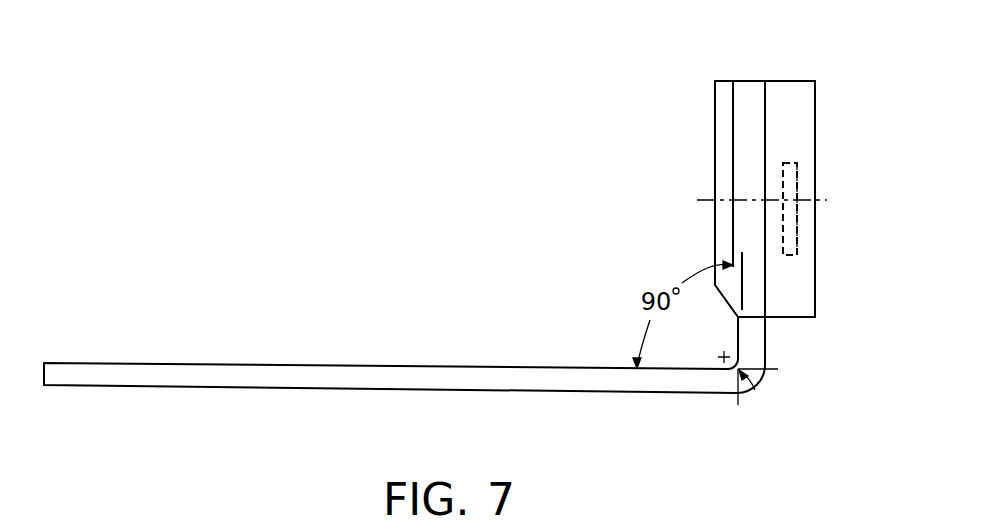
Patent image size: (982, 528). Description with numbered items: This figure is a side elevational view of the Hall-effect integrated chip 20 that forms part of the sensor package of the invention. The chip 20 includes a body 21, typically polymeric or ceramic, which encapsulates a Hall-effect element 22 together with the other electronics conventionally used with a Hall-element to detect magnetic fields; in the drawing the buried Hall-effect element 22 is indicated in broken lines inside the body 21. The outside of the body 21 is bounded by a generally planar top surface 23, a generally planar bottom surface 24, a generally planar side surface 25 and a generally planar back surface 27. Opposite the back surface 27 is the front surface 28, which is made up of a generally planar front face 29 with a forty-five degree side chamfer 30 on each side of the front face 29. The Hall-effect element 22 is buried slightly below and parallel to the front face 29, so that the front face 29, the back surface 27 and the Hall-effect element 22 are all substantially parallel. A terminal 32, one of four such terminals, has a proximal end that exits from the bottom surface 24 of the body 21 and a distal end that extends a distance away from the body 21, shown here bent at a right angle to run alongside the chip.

The Hall-effect integrated chip 20 is at (747, 98).
The body 21 is at (743, 171).
The Hall-effect element 22 is at (797, 168).
The top surface 23 is at (749, 80).
The bottom surface 24 is at (797, 318).
The side surface 25 is at (742, 233).
The back surface 27 is at (714, 129).
The front surface 28 is at (793, 282).
The front face 29 is at (815, 296).
The side chamfer 30 is at (800, 97).
The terminal 32 is at (84, 382).